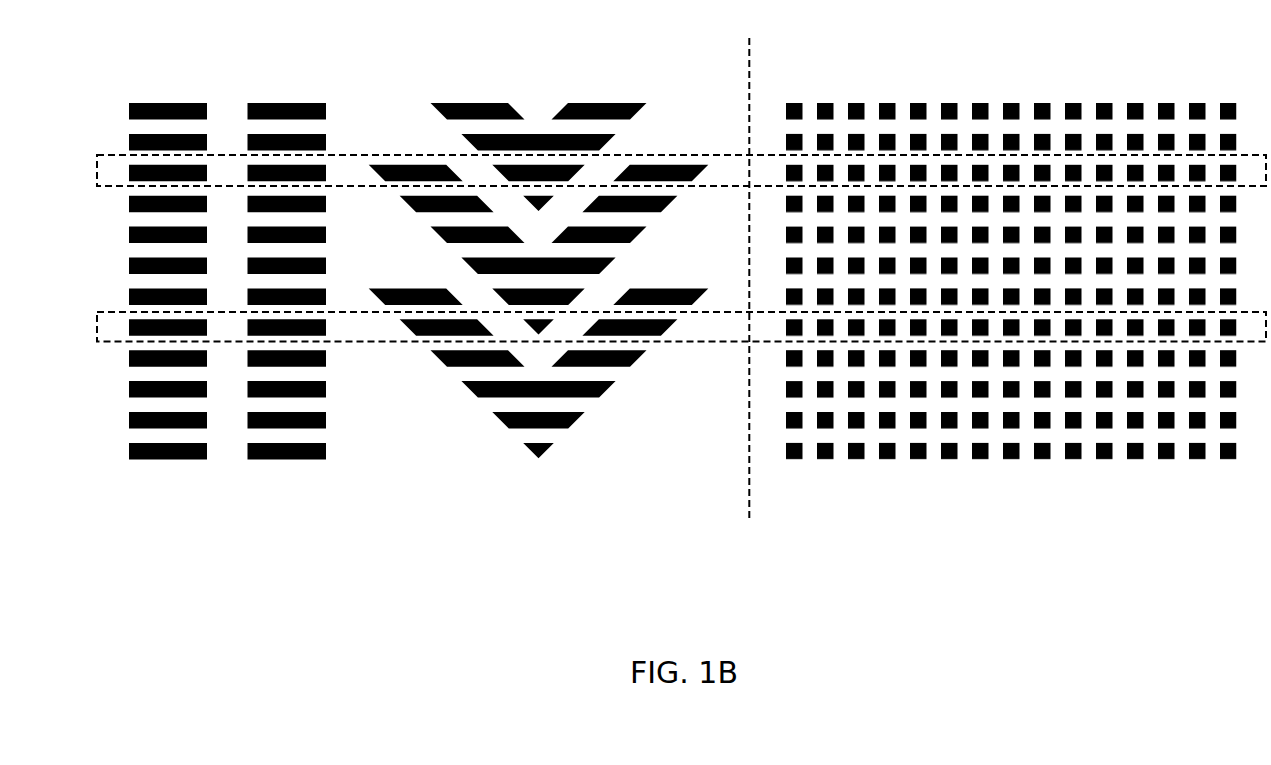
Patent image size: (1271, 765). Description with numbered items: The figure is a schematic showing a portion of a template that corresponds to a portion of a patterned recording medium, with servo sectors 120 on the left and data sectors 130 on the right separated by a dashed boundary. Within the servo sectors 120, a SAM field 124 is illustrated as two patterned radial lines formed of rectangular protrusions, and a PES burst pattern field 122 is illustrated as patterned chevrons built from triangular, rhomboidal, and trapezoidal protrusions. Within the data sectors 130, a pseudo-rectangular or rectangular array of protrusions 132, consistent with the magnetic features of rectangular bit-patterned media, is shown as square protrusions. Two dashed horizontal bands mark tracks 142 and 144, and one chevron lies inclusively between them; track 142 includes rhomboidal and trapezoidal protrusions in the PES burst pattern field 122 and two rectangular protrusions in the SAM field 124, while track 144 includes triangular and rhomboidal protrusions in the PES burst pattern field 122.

The servo sectors 120 is at (707, 45).
The data sectors 130 is at (749, 38).
The PES burst pattern field 122 is at (546, 80).
The SAM field 124 is at (306, 80).
The rectangular array of protrusions 132 is at (1075, 77).
The track 142 is at (774, 173).
The track 144 is at (713, 323).